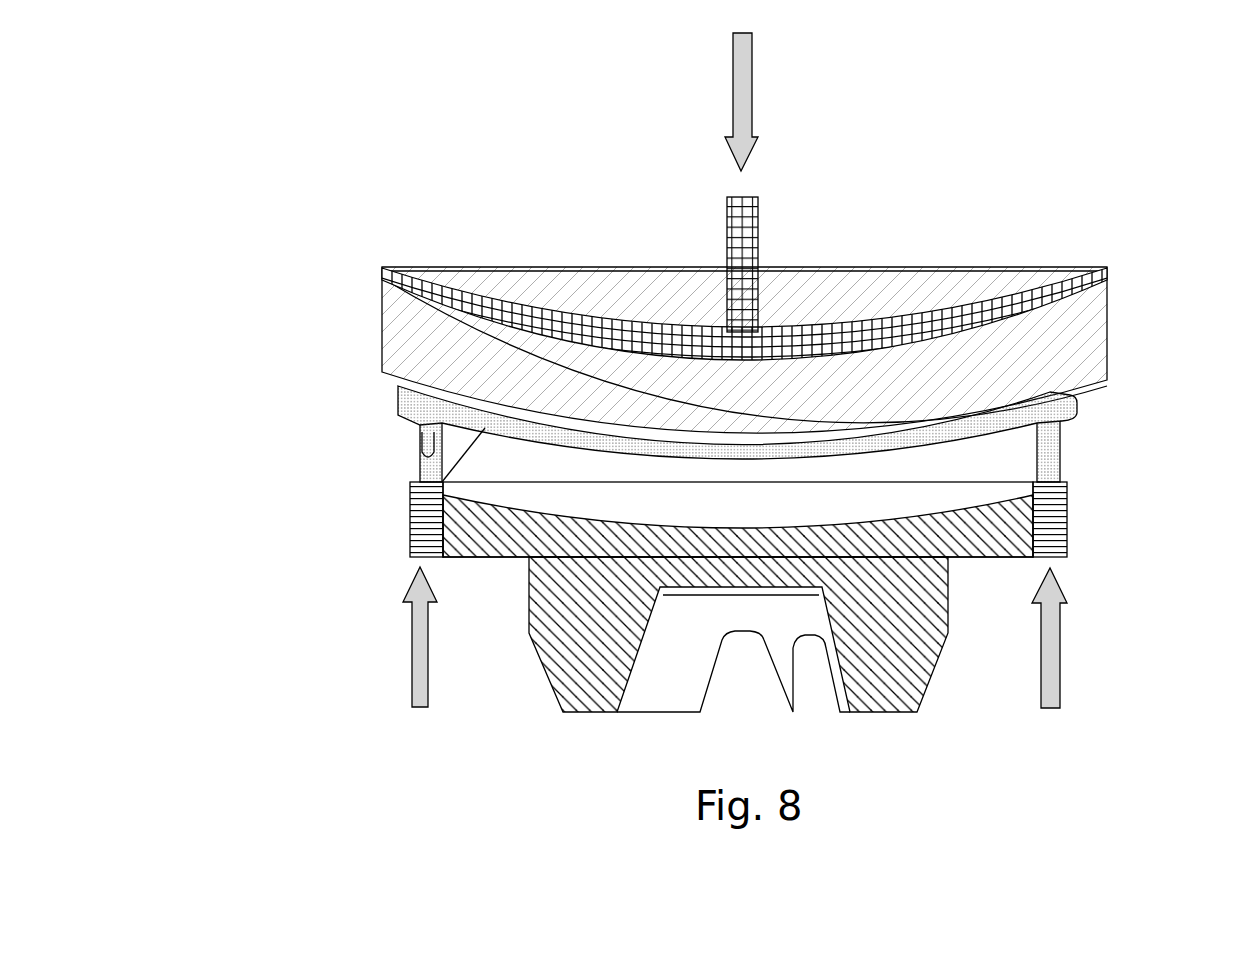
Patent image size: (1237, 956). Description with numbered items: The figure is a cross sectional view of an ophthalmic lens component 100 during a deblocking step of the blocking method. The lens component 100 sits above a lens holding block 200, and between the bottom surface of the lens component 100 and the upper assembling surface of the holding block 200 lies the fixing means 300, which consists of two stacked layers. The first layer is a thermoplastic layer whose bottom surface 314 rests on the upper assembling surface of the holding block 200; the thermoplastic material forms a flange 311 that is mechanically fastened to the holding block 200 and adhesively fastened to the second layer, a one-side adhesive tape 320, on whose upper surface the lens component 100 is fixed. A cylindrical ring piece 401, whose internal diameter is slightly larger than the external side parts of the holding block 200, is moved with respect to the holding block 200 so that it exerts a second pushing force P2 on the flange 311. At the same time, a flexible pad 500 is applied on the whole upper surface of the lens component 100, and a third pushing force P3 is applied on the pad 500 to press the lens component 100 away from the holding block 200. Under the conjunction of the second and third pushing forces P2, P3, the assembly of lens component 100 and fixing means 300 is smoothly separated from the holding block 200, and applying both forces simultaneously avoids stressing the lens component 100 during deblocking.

The ophthalmic lens component 100 is at (1091, 255).
The lens holding block 200 is at (940, 740).
The fixing means 300 is at (630, 438).
The flange 311 is at (432, 462).
The bottom surface of thermoplastic layer 314 is at (410, 500).
The one-side adhesive tape 320 is at (395, 388).
The cylindrical ring piece 401 is at (1067, 540).
The flexible pad 500 is at (747, 247).
The second pushing force P2 is at (425, 675).
The third pushing force P3 is at (778, 102).